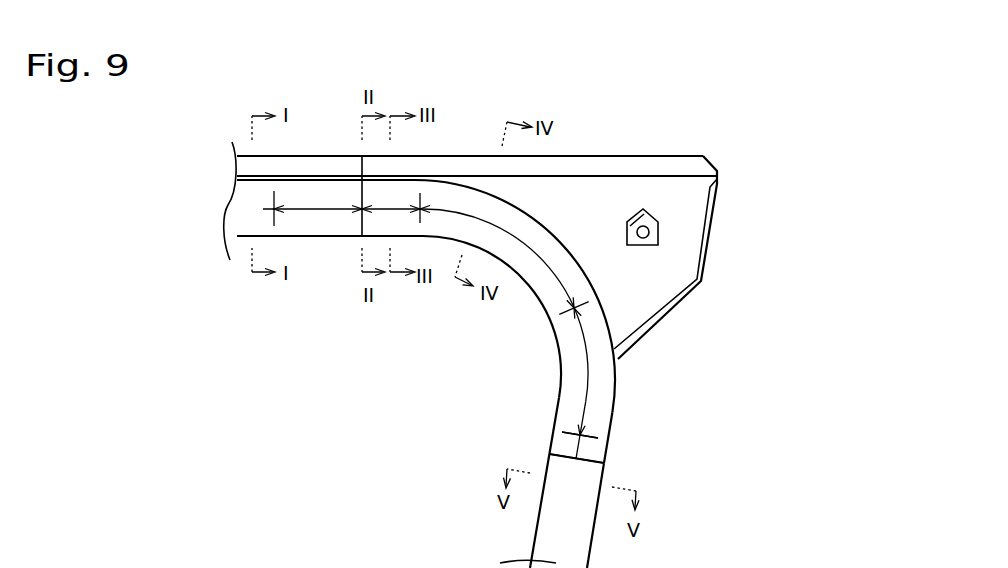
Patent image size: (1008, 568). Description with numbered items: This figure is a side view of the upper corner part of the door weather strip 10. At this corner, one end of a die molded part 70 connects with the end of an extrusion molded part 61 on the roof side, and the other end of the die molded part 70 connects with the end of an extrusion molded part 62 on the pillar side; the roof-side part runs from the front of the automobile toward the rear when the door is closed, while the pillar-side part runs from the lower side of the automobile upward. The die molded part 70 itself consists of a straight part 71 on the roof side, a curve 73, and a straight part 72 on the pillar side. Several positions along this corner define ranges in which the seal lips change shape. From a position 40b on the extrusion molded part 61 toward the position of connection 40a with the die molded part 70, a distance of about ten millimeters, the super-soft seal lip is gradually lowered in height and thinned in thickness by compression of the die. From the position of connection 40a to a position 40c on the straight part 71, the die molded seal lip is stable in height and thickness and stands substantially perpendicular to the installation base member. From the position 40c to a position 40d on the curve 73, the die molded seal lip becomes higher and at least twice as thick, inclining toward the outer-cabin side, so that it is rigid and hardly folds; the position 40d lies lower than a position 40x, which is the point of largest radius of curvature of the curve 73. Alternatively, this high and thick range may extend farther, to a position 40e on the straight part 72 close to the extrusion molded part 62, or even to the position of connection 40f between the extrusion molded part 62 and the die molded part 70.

The door weather strip 10 is at (278, 417).
The position of connection 40a is at (363, 209).
The position on the extrusion molded part on the roof side 40b is at (263, 209).
The position on the straight part on the roof side 40c is at (421, 207).
The position on the curve 40d is at (578, 306).
The position on the straight part on the pillar side 40e is at (604, 447).
The position of connection 40f is at (578, 458).
The position of the largest radius of curvature 40x is at (538, 258).
The extrusion molded part on the roof side 61 is at (322, 225).
The extrusion molded part on the pillar side 62 is at (577, 535).
The die molded part 70 is at (536, 297).
The straight part on the roof side 71 is at (375, 221).
The straight part on the pillar side 72 is at (600, 407).
The curve 73 is at (592, 313).